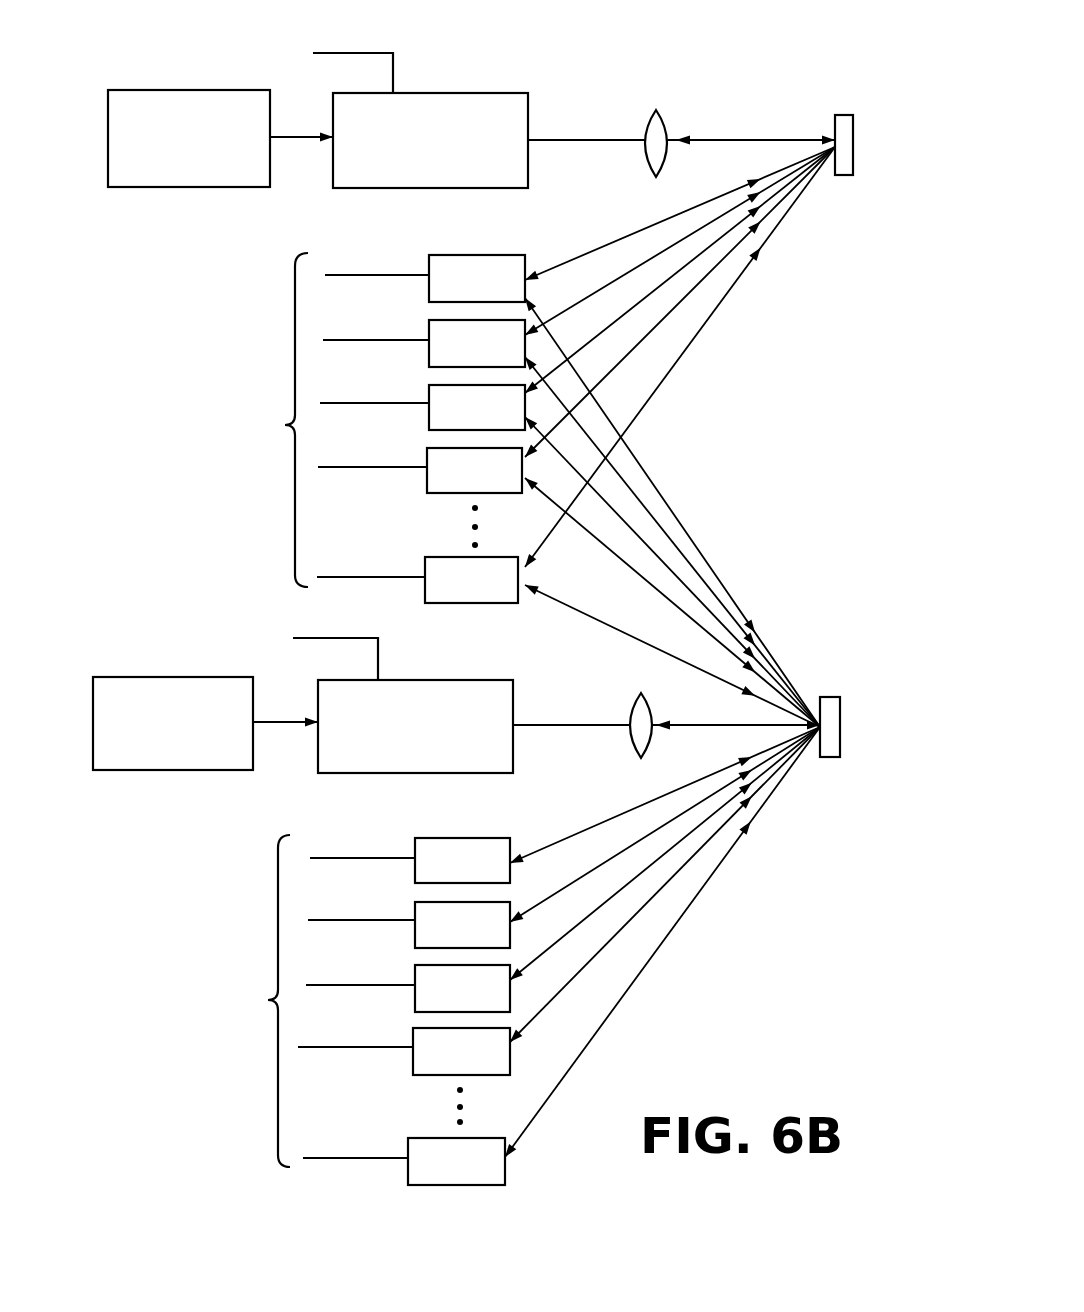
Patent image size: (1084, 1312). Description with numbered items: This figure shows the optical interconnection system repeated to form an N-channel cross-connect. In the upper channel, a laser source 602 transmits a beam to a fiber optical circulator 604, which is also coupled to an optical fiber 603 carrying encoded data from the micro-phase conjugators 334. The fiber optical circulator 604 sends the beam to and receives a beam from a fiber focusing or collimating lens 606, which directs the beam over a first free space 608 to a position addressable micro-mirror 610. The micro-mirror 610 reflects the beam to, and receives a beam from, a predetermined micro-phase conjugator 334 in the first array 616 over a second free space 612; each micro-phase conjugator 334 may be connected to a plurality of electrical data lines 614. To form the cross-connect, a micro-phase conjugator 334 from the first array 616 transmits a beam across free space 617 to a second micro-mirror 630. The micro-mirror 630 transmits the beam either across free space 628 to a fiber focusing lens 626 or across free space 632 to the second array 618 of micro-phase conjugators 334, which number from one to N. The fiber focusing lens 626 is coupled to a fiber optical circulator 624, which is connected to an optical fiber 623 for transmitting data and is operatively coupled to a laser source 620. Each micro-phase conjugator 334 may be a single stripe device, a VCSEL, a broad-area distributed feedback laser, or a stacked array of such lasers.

The laser source 602 is at (196, 90).
The optical fiber 603 is at (399, 64).
The fiber optical circulator 604 is at (480, 93).
The fiber focusing or collimating lens 606 is at (668, 110).
The first free space 608 is at (770, 127).
The position addressable micro-mirror 610 is at (843, 115).
The second free space 612 is at (735, 453).
The electrical data lines 614 is at (255, 710).
The first array of micro-phase conjugators 616 is at (344, 536).
The free space 617 is at (823, 608).
The second array of micro-phase conjugators 618 is at (375, 1118).
The laser source 620 is at (168, 677).
The optical fiber 623 is at (315, 633).
The fiber optical circulator 624 is at (440, 680).
The fiber focusing lens 626 is at (630, 706).
The free space 628 is at (740, 717).
The second micro-mirror 630 is at (832, 697).
The free space 632 is at (727, 1035).
The broad area diode laser micro-phase conjugator 334 is at (457, 294).